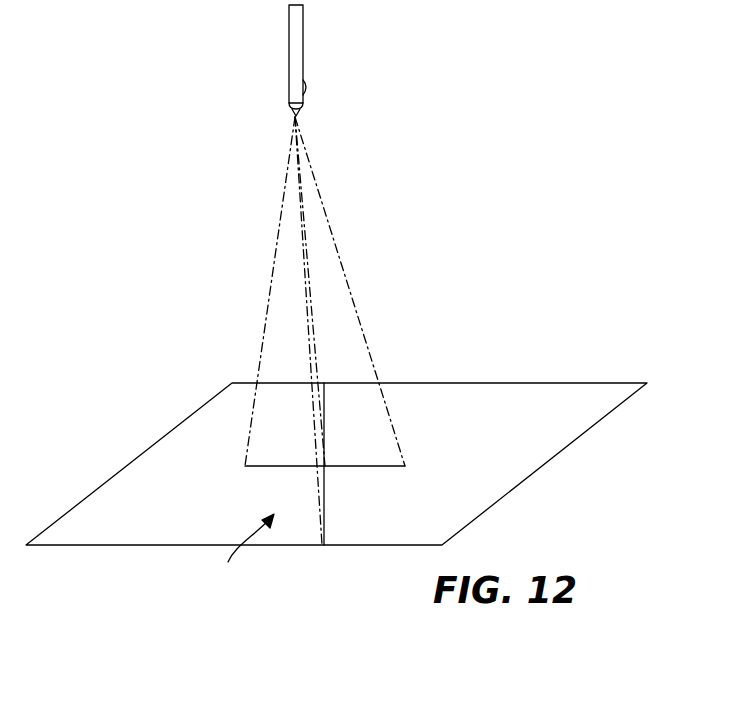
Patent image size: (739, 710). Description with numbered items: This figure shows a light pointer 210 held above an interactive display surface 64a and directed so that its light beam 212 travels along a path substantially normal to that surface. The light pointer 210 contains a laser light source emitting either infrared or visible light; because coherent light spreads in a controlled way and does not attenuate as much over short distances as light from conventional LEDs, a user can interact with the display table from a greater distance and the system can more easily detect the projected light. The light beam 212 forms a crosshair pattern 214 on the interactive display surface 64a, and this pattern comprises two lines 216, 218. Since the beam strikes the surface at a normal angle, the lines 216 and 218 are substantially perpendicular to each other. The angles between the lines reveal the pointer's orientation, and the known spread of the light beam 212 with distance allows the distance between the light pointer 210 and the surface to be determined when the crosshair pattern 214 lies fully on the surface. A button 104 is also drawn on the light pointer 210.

The light pointer 210 is at (288, 56).
The button 104 is at (308, 87).
The light beam 212 is at (271, 276).
The interactive display surface 64a is at (145, 452).
The line 216 is at (263, 466).
The line 218 is at (326, 500).
The crosshair pattern 214 is at (241, 552).